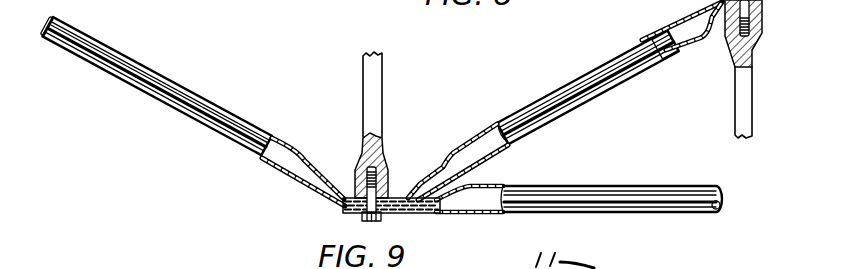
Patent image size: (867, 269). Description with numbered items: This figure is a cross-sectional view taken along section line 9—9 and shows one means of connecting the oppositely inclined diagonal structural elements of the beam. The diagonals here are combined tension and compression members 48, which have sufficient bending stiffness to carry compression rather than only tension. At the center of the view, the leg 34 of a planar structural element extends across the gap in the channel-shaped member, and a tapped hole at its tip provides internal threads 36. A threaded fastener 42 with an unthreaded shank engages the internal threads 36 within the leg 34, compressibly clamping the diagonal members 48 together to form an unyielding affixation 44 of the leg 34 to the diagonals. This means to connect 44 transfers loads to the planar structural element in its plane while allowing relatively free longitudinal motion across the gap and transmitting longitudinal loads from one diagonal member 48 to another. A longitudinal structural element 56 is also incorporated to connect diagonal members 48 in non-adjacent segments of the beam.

The section line 9— 9 is at (330, 0).
The leg 34 is at (381, 84).
The internal threads 36 is at (382, 162).
The threaded fastener 42 is at (365, 218).
The unyielding affixation 44 is at (350, 188).
The combined tension and compression member 48 is at (176, 114).
The longitudinal structural element 56 is at (633, 214).